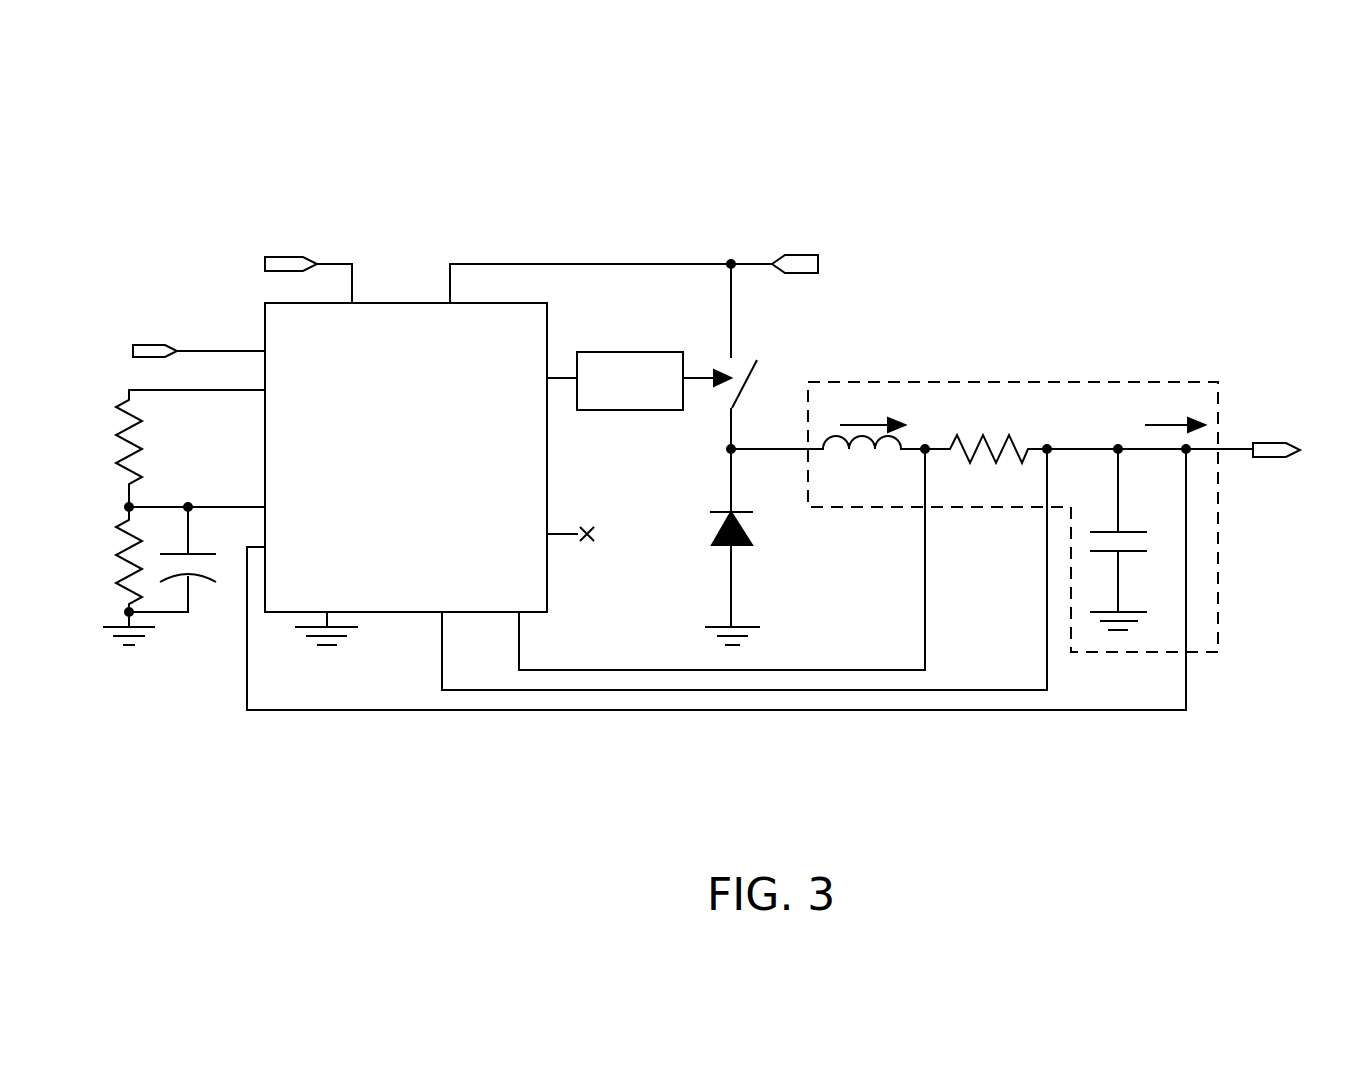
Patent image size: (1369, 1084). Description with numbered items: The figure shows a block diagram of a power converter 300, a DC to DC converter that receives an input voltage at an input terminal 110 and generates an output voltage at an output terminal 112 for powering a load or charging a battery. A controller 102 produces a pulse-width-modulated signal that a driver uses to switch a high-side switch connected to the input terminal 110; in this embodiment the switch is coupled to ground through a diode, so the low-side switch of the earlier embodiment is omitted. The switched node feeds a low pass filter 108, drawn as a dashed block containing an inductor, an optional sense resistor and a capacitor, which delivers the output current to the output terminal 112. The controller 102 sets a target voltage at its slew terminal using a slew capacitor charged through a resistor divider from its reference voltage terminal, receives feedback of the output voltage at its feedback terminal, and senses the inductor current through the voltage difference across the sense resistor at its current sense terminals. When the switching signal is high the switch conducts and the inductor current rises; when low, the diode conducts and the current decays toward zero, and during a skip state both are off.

The power converter 300 is at (176, 210).
The controller 102 is at (503, 303).
The terminal 110 is at (784, 256).
The low pass filter 108 is at (1072, 382).
The terminal 112 is at (1275, 441).